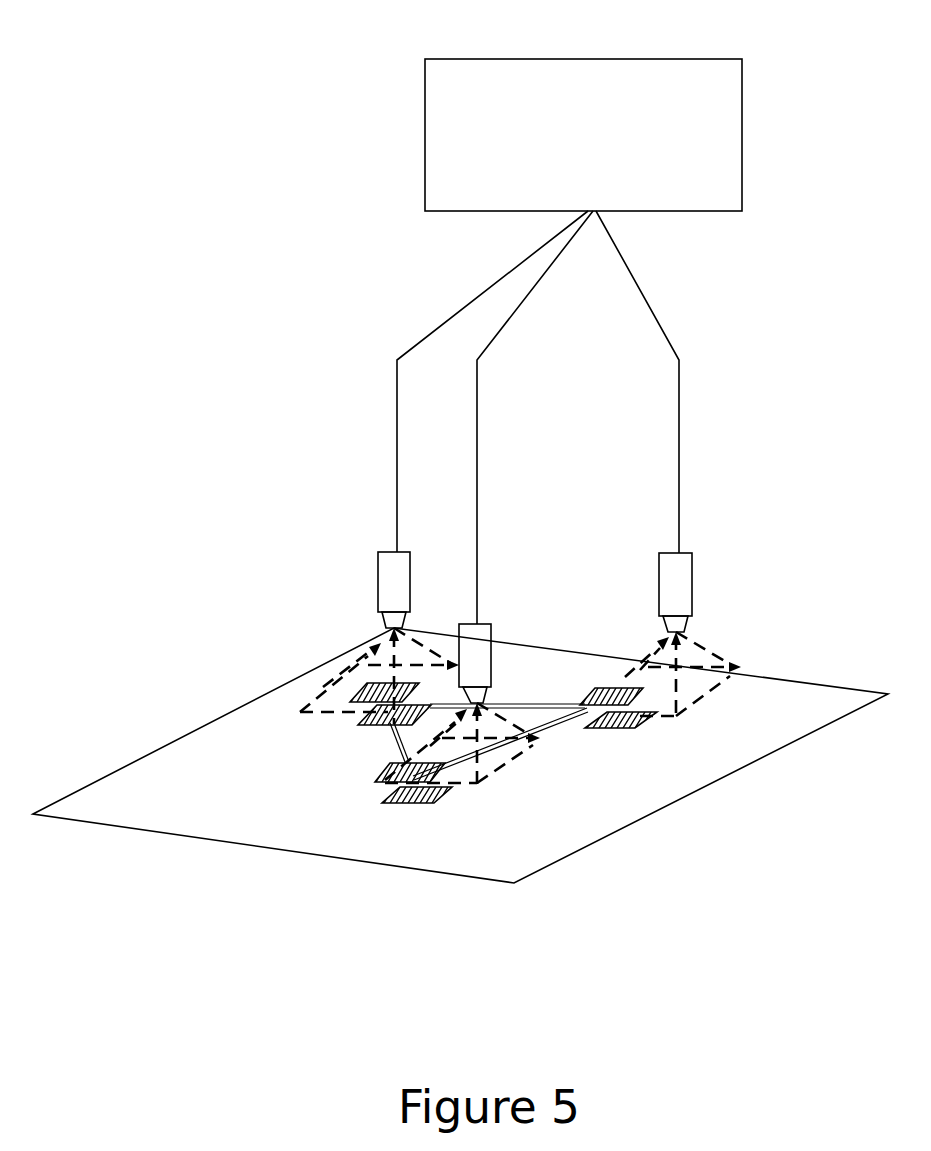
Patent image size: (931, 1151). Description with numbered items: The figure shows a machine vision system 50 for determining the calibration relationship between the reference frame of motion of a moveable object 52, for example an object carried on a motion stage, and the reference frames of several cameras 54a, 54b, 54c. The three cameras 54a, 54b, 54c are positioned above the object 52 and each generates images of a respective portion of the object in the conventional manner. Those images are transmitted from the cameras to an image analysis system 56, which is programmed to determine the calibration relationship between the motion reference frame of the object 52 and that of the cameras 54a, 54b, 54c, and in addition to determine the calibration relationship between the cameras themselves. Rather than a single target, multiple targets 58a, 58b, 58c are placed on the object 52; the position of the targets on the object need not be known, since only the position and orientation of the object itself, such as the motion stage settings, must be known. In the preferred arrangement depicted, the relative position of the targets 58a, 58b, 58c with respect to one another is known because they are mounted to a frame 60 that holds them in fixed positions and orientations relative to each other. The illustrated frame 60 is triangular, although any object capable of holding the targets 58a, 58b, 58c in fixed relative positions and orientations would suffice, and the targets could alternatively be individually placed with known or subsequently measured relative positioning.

The machine vision system 50 is at (312, 127).
The moveable object 52 is at (239, 757).
The camera 54a is at (383, 578).
The camera 54b is at (488, 627).
The camera 54c is at (678, 572).
The image analysis system 56 is at (718, 79).
The target 58a is at (373, 723).
The target 58b is at (433, 801).
The target 58c is at (630, 722).
The frame 60 is at (538, 698).